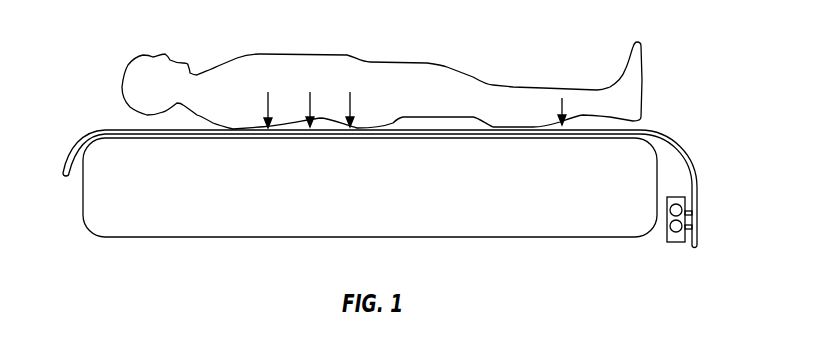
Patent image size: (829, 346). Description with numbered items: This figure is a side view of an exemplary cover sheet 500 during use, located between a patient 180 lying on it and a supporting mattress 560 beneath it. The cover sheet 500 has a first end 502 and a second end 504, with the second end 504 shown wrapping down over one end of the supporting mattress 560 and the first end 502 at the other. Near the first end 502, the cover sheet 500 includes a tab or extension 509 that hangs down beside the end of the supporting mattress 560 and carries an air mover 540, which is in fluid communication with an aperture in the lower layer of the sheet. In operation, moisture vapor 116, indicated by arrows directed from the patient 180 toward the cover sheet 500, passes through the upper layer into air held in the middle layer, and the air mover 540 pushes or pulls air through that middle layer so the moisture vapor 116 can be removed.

The cover sheet 500 is at (383, 181).
The first end 502 is at (680, 147).
The second end 504 is at (67, 158).
The extension 509 is at (702, 203).
The air mover 540 is at (676, 245).
The supporting mattress 560 is at (280, 227).
The patient 180 is at (400, 73).
The moisture vapor 116 is at (349, 96).